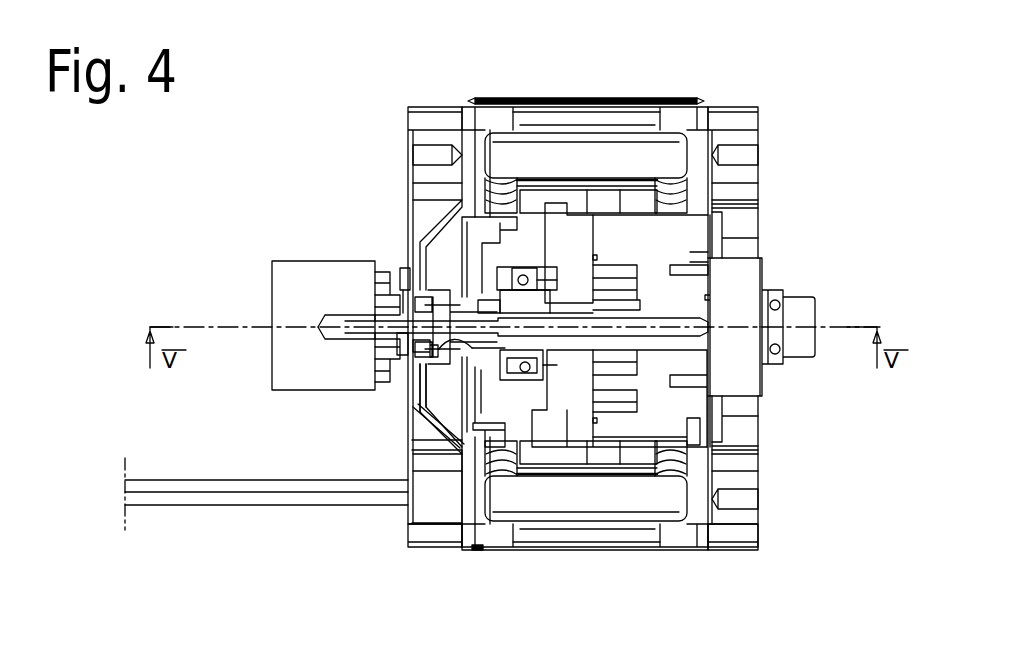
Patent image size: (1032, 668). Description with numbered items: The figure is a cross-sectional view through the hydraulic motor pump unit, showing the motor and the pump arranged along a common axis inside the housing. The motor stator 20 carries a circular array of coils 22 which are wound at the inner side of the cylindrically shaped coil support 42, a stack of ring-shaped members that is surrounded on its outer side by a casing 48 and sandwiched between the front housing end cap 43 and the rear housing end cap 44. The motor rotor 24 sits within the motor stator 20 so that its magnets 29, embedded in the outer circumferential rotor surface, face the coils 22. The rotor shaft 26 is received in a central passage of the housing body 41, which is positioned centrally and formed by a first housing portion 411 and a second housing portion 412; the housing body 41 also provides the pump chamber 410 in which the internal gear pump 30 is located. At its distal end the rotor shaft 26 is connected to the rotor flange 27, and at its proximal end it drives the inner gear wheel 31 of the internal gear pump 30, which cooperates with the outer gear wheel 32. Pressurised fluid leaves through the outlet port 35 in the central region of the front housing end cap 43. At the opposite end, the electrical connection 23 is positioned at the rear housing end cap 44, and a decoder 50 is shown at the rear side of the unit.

The motor stator 20 is at (598, 497).
The coil 22 is at (582, 120).
The electrical connection 23 is at (212, 481).
The motor rotor 24 is at (532, 458).
The rotor shaft 26 is at (440, 330).
The rotor flange 27 is at (452, 298).
The magnet 29 is at (645, 195).
The internal gear pump 30 is at (706, 409).
The inner gear wheel 31 is at (632, 358).
The outer gear wheel 32 is at (627, 403).
The outlet port 35 is at (797, 352).
The housing body 41 is at (729, 261).
The coil support 42 is at (558, 120).
The front housing end cap 43 is at (690, 120).
The rear housing end cap 44 is at (480, 118).
The casing 48 is at (637, 104).
The decoder 50 is at (310, 292).
The pump chamber 410 is at (630, 287).
The first housing portion 411 is at (672, 256).
The second housing portion 412 is at (583, 228).